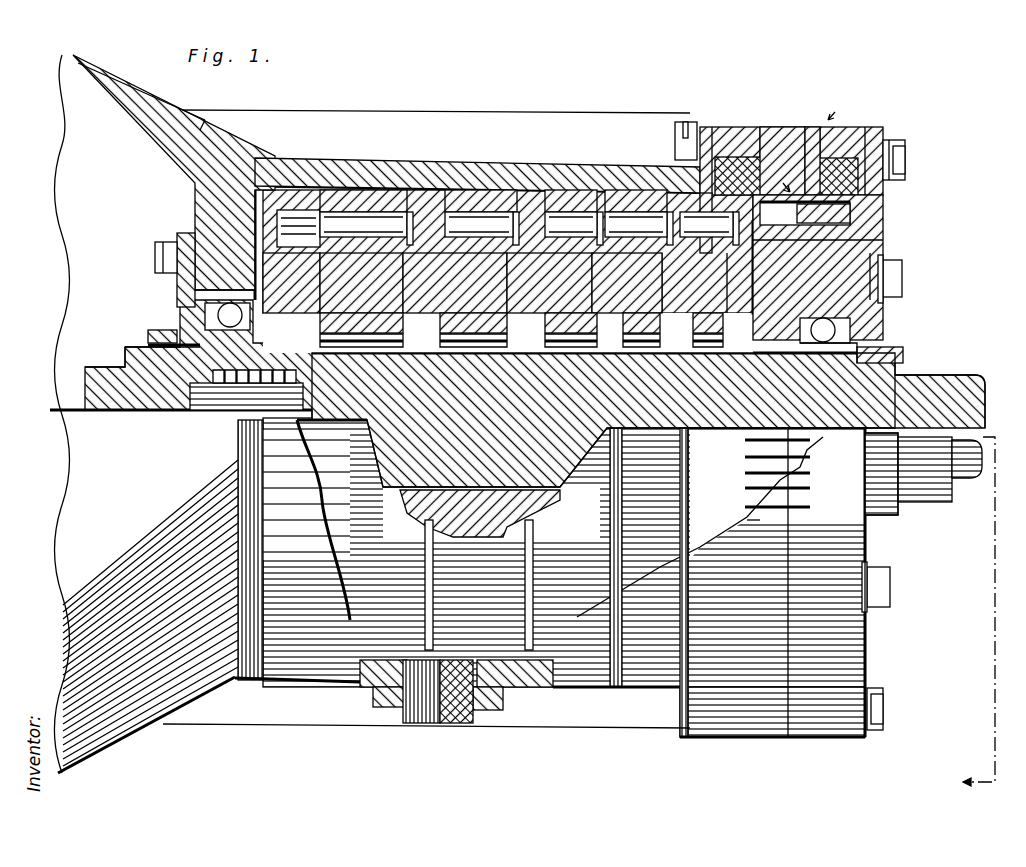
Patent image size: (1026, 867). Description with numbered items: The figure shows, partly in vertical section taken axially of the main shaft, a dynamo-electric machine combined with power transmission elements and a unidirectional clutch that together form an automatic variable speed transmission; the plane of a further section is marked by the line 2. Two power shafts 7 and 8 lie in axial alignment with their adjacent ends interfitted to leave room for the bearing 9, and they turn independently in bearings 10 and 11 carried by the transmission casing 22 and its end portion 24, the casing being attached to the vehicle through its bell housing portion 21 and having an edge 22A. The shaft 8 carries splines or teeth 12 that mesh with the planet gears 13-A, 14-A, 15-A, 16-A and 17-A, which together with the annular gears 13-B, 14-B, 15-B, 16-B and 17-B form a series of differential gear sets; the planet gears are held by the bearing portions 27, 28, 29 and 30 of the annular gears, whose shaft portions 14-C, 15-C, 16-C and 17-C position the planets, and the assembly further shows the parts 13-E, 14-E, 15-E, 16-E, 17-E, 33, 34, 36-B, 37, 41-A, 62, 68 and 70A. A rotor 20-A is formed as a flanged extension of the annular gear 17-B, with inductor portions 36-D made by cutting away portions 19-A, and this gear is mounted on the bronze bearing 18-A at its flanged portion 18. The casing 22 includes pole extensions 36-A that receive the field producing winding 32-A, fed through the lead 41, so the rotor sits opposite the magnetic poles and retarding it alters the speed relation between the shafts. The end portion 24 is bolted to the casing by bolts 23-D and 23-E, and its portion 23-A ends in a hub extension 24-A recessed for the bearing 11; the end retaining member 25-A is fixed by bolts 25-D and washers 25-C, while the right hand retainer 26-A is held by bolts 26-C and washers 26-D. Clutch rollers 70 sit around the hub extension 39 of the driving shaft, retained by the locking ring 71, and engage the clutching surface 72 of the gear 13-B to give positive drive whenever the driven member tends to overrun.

The section line 2- 2 is at (889, 445).
The power shaft 7 is at (125, 357).
The power shaft 8 is at (955, 372).
The bearing 9 is at (205, 409).
The bearing 10 is at (205, 310).
The bearing 11 is at (880, 330).
The splines or teeth 12 is at (360, 356).
The planet gear 13-A is at (390, 225).
The annular gear 13-B is at (345, 192).
The coil pin 13-E is at (365, 210).
The planet gear 14-A is at (490, 225).
The annular gear 14-B is at (475, 210).
The shaft portion 14-C is at (450, 290).
The coil top bar 14-E is at (450, 208).
The planet gear 15-A is at (597, 225).
The annular gear 15-B is at (575, 218).
The shaft portion 15-C is at (560, 285).
The coil top bar 15-E is at (553, 208).
The planet gear 16-A is at (655, 230).
The annular gear 16-B is at (636, 218).
The shaft portion 16-C is at (520, 292).
The coil top bar 16-E is at (628, 205).
The planet gear 17-A is at (745, 155).
The annular gear 17-B is at (712, 155).
The shaft portion 17-C is at (690, 292).
The coil pin 17-E is at (730, 128).
The flanged portion 18 is at (870, 312).
The bronze bearing 18-A is at (880, 345).
The cut-away portions 19-A is at (830, 479).
The rotor 20-A is at (880, 205).
The bell housing portion 21 is at (115, 740).
The transmission casing 22 is at (175, 110).
The shell edge 22A is at (205, 120).
The portion of end portion 23-A is at (870, 218).
The bolts 23-D is at (900, 143).
The bolt head 23-E is at (895, 130).
The end portion of casing 24 is at (865, 668).
The hub extension 24-A is at (885, 253).
The end retaining member 25-A is at (150, 337).
The washers 25-C is at (182, 236).
The bolts 25-D is at (158, 257).
The right hand retainer 26-A is at (880, 305).
The bolts 26-C is at (890, 265).
The washers 26-D is at (880, 288).
The bearing portion 27 is at (425, 540).
The bearing portion 28 is at (528, 540).
The bearing portion 29 is at (580, 350).
The bearing portion 30 is at (640, 345).
The field producing winding 32-A is at (752, 165).
The cylindrical body 33 is at (745, 715).
The spacer 34 is at (815, 128).
The pole extensions 36-A is at (790, 128).
The partition 36-B is at (870, 236).
The inductor portions 36-D is at (880, 198).
The top plate 37 is at (540, 178).
The hub extension 39 is at (255, 264).
The lead 41 is at (683, 122).
The terminal pin 41-A is at (683, 128).
The fins 62 is at (710, 468).
The lower block 68 is at (432, 705).
The clutch rollers 70 is at (300, 183).
The plug body 70A is at (285, 258).
The locking ring 71 is at (250, 203).
The clutching surface 72 is at (278, 165).